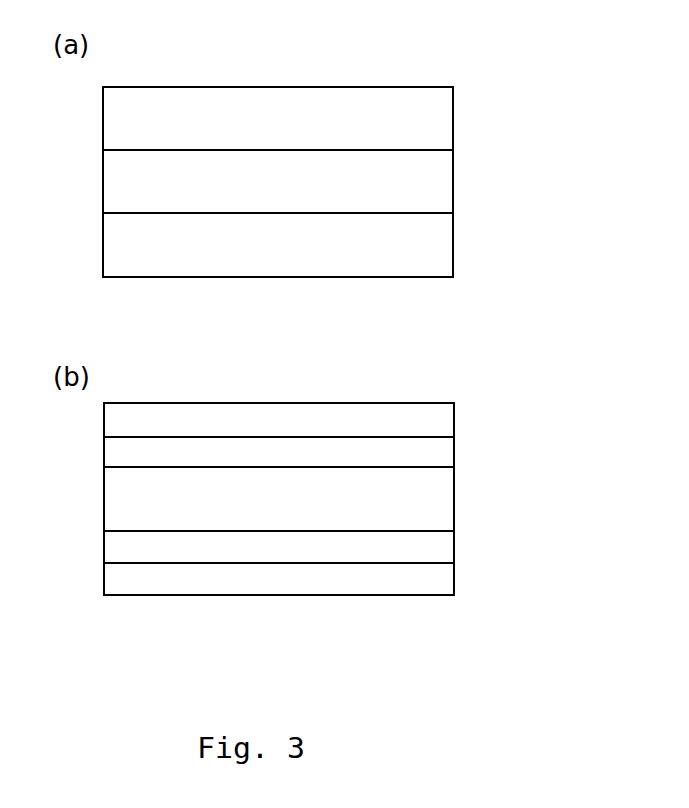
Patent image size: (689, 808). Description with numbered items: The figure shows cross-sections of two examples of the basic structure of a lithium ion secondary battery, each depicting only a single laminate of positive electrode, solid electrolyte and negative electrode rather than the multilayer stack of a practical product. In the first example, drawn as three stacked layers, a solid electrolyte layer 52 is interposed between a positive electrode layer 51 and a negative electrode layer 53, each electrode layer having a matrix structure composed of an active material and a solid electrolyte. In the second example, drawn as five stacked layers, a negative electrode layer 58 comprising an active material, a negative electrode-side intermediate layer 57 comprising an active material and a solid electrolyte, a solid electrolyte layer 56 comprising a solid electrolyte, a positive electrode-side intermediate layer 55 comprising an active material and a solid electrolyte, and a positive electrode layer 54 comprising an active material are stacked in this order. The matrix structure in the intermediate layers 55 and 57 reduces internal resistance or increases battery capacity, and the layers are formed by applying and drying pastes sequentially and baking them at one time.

The positive electrode layer 51 is at (369, 115).
The solid electrolyte layer 52 is at (423, 182).
The negative electrode layer 53 is at (396, 246).
The positive electrode layer 54 is at (382, 419).
The positive electrode-side intermediate layer 55 is at (440, 456).
The solid electrolyte layer 56 is at (387, 500).
The negative electrode-side intermediate layer 57 is at (393, 549).
The negative electrode layer 58 is at (303, 579).